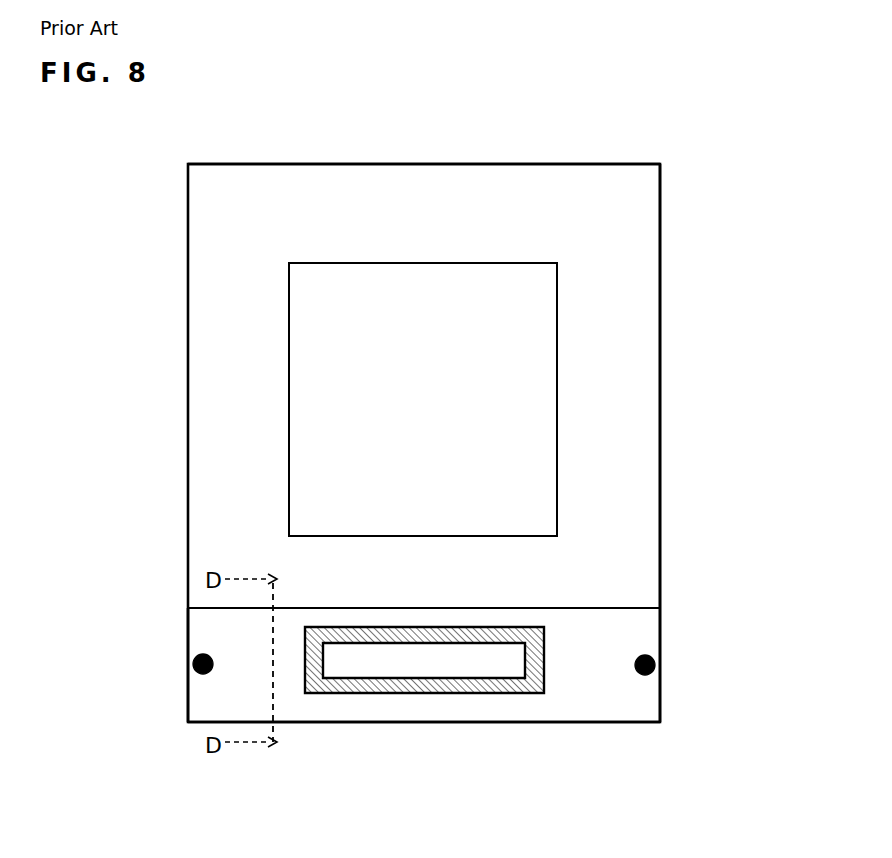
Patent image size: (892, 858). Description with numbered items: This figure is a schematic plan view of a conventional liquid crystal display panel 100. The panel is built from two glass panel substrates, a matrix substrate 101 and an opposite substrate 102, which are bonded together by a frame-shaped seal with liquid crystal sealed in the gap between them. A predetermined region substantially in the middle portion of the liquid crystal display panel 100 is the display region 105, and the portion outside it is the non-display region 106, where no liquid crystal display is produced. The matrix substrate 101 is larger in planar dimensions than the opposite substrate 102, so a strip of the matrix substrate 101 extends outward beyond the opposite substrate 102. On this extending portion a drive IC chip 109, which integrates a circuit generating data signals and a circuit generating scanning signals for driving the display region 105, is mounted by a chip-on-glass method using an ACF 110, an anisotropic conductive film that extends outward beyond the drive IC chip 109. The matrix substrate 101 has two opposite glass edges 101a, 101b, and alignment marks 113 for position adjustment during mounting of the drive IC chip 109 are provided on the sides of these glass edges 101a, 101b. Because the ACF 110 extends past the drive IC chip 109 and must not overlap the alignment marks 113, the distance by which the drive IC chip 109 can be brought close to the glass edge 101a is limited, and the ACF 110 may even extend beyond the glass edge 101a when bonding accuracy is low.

The liquid crystal display panel 100 is at (723, 160).
The matrix substrate 101 is at (590, 723).
The glass edge 101a is at (188, 697).
The glass edge 101b is at (660, 695).
The opposite substrate 102 is at (660, 290).
The display region 105 is at (322, 408).
The non-display region 106 is at (640, 410).
The drive IC chip 109 is at (379, 673).
The ACF 110 is at (440, 693).
The alignment marks 113 is at (198, 658).